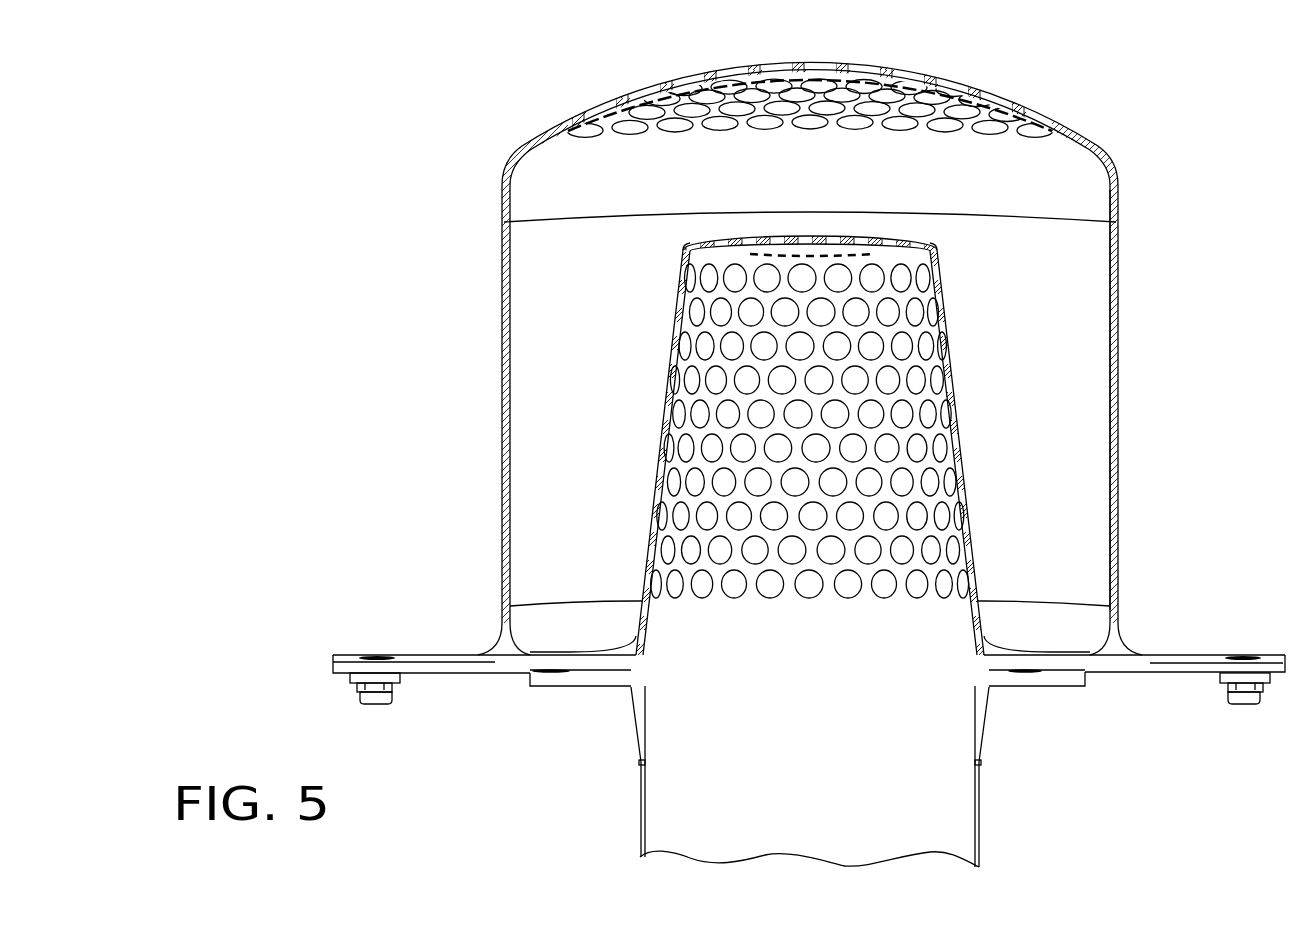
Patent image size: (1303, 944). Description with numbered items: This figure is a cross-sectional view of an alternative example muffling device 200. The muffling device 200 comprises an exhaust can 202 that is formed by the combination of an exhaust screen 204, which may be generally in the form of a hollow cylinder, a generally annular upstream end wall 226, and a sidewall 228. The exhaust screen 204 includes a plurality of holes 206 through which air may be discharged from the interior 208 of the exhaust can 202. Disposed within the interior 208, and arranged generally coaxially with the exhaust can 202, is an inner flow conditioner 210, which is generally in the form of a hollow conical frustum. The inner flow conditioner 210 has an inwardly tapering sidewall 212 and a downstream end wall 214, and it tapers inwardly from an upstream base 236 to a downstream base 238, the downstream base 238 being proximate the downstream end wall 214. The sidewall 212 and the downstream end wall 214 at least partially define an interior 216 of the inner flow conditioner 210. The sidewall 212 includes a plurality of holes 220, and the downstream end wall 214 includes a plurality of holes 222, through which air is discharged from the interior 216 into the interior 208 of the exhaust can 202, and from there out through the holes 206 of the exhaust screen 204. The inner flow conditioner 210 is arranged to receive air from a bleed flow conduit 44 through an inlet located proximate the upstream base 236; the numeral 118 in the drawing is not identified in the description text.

The muffling device 200 is at (371, 299).
The exhaust can 202 is at (1130, 406).
The exhaust screen 204 is at (934, 62).
The holes 206 is at (990, 100).
The interior 208 is at (567, 237).
The inner flow conditioner 210 is at (953, 385).
The sidewall 212 is at (963, 518).
The downstream end wall 214 is at (720, 243).
The interior 216 is at (743, 388).
The holes 220 is at (955, 492).
The holes 222 is at (873, 236).
The upstream end wall 226 is at (515, 673).
The sidewall 228 is at (1120, 308).
The upstream base 236 is at (982, 640).
The downstream base 238 is at (688, 243).
The inlet 118 is at (701, 691).
The bleed flow conduit 44 is at (978, 815).